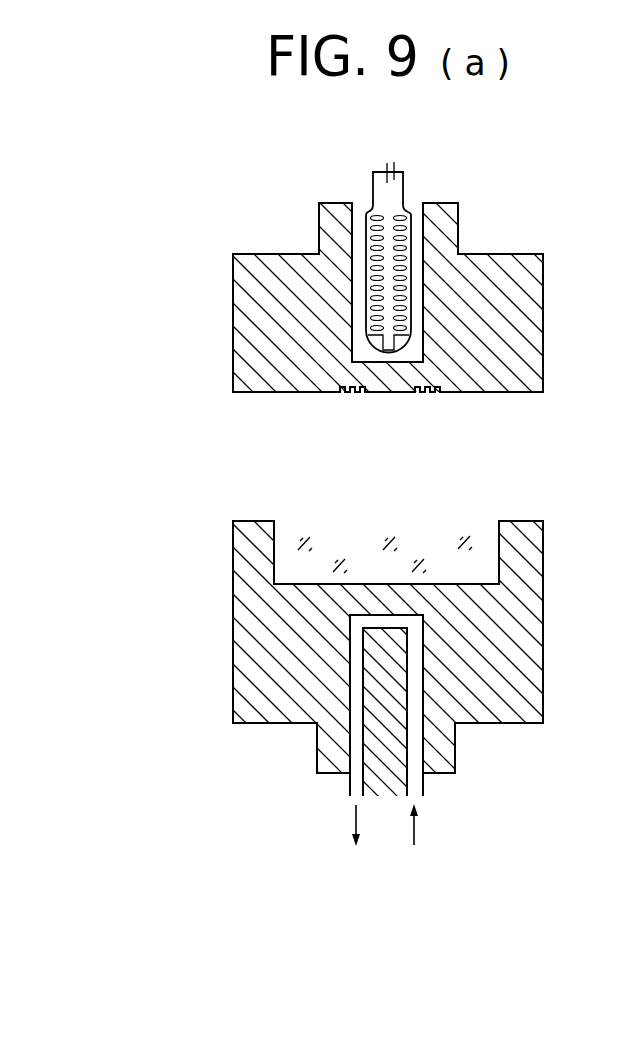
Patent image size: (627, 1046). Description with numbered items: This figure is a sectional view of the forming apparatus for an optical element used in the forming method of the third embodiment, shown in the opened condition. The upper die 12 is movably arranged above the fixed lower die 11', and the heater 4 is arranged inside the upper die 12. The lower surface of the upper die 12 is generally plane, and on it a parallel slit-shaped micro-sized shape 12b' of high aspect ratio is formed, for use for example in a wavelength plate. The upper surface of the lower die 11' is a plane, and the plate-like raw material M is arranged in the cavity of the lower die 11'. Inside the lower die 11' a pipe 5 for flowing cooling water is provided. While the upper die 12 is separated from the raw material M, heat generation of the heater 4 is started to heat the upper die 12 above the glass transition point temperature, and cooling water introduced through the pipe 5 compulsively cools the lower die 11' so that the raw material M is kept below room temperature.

The heater 4 is at (372, 183).
The upper die 12 is at (530, 320).
The parallel slit-shaped micro-sized shape 12b' is at (380, 417).
The lower die 11' is at (417, 632).
The raw material M is at (435, 533).
The pipe 5 is at (347, 786).